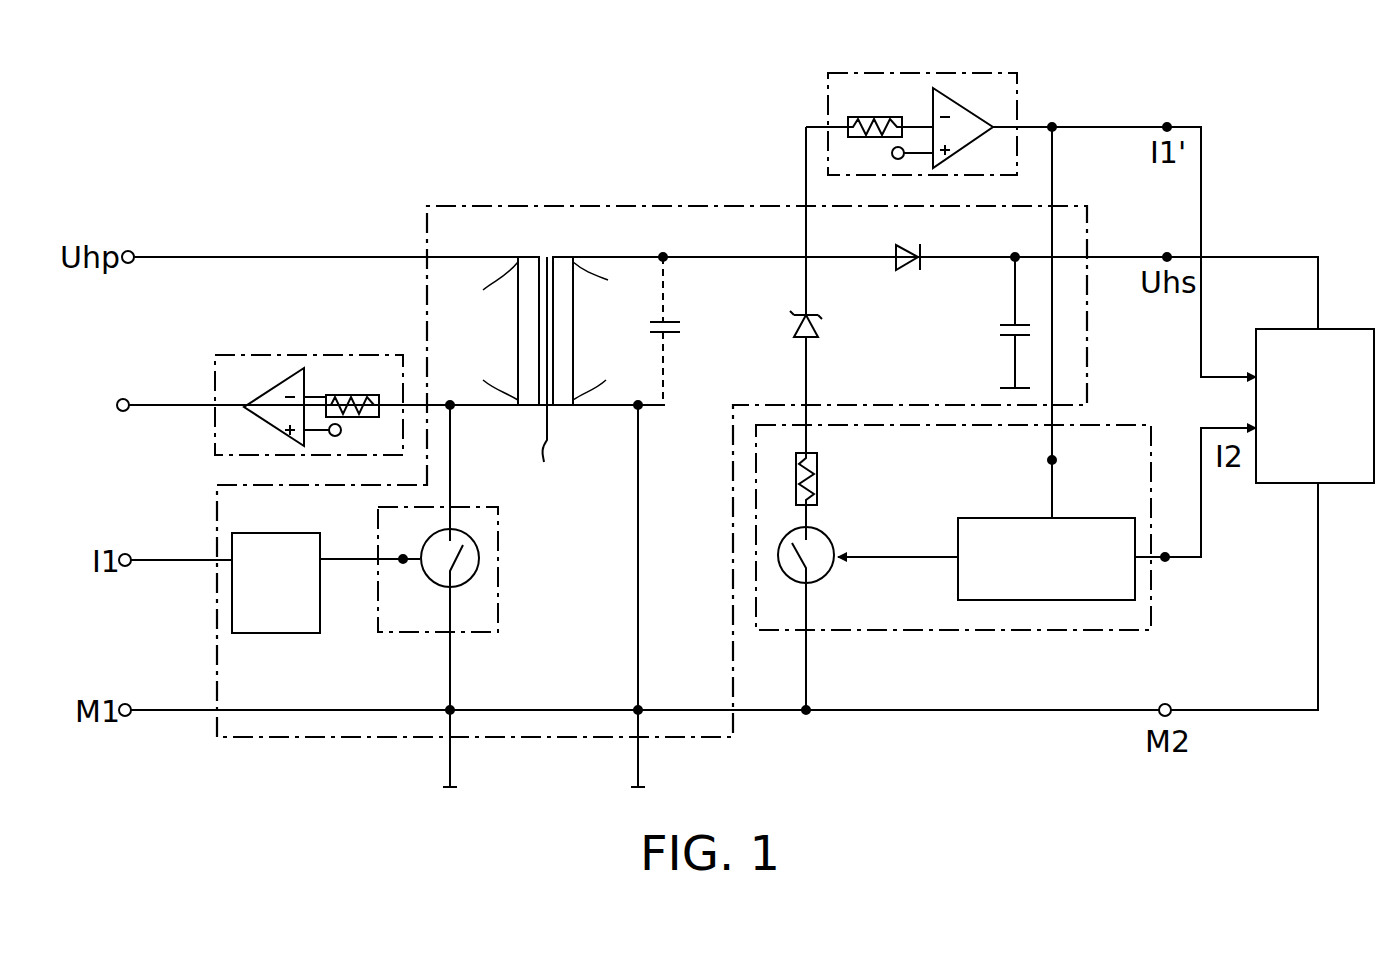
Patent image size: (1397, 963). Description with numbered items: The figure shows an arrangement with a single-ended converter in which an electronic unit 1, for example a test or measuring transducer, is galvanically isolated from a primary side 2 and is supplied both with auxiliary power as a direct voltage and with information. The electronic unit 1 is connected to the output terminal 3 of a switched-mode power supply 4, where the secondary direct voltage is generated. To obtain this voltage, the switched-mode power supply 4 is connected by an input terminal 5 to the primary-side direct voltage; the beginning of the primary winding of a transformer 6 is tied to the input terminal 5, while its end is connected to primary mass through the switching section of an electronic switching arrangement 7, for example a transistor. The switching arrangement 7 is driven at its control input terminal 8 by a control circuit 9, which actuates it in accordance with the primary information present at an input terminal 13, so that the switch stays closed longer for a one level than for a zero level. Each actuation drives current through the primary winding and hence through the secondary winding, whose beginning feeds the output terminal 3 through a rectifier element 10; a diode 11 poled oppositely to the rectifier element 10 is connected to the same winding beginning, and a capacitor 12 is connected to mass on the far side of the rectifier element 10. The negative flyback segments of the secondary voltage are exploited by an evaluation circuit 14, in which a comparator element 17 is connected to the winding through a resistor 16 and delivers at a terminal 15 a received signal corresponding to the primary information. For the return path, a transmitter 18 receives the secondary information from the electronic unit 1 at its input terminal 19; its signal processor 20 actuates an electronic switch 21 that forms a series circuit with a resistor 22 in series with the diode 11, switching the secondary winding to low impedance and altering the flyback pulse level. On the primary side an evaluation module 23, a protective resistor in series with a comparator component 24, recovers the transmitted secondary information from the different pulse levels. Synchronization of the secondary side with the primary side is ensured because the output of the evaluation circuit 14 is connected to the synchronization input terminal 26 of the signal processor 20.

The electronic unit 1 is at (1305, 452).
The primary side 2 is at (157, 504).
The output terminal 3 is at (1165, 252).
The switched-mode power supply 4 is at (1087, 205).
The input terminal 5 is at (131, 252).
The transformer 6 is at (558, 492).
The electronic switching arrangement 7 is at (459, 569).
The control input terminal 8 is at (403, 565).
The control circuit 9 is at (246, 570).
The rectifier element 10 is at (903, 270).
The diode 11 is at (820, 330).
The capacitor 12 is at (1000, 330).
The input terminal 13 is at (127, 567).
The evaluation circuit 14 is at (942, 95).
The terminal 15 is at (1170, 122).
The resistor 16 is at (896, 117).
The comparator element 17 is at (953, 115).
The transmitter 18 is at (977, 552).
The input terminal 19 is at (1165, 552).
The signal processor 20 is at (1085, 518).
The electronic switch 21 is at (830, 541).
The resistor 22 is at (817, 480).
The evaluation module 23 is at (309, 370).
The comparator component 24 is at (276, 388).
The synchronization input terminal 26 is at (1052, 460).